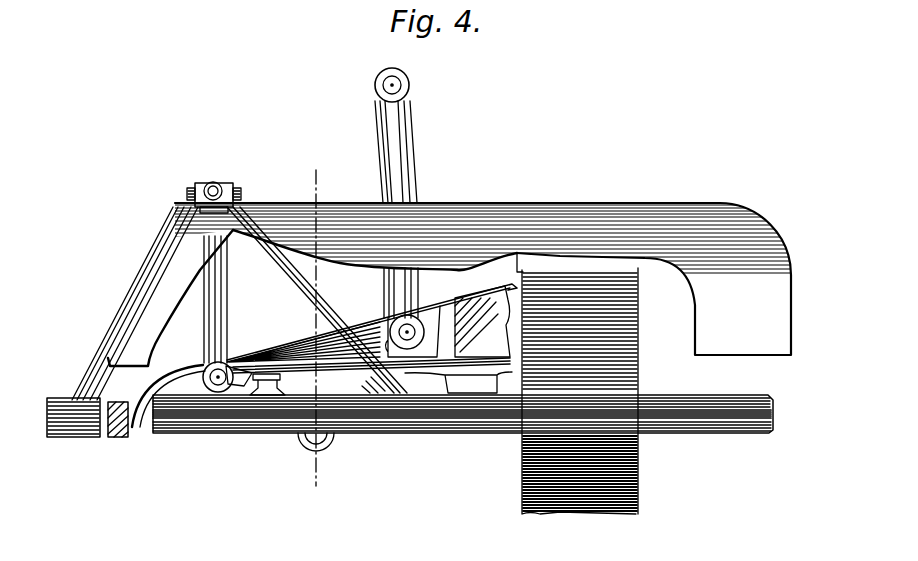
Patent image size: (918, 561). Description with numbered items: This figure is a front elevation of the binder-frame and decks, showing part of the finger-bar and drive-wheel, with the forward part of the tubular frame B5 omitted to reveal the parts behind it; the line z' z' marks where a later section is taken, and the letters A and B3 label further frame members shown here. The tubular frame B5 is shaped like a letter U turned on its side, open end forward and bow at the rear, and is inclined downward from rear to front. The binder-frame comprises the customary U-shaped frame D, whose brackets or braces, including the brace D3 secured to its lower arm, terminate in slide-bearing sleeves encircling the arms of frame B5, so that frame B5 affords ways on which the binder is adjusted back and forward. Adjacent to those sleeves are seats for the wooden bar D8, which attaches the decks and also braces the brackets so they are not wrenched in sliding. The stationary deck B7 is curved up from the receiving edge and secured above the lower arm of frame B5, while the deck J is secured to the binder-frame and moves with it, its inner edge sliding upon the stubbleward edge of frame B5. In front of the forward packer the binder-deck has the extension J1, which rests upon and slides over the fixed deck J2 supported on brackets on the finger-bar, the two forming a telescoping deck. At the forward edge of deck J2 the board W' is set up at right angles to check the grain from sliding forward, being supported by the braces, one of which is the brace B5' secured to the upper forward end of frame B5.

The tubular frame B5 is at (226, 259).
The diagonal brace B5' is at (226, 303).
The deck B7 is at (142, 395).
The bed rail B3 is at (211, 435).
The wooden bar D8 is at (155, 390).
The U-shaped frame D is at (402, 286).
The bracket or brace D3 is at (395, 400).
The deck J is at (502, 212).
The binder-deck extension J1 is at (487, 362).
The fixed deck J2 is at (381, 381).
The board W' is at (454, 284).
The frame column A is at (638, 459).
The section line Z' is at (315, 330).